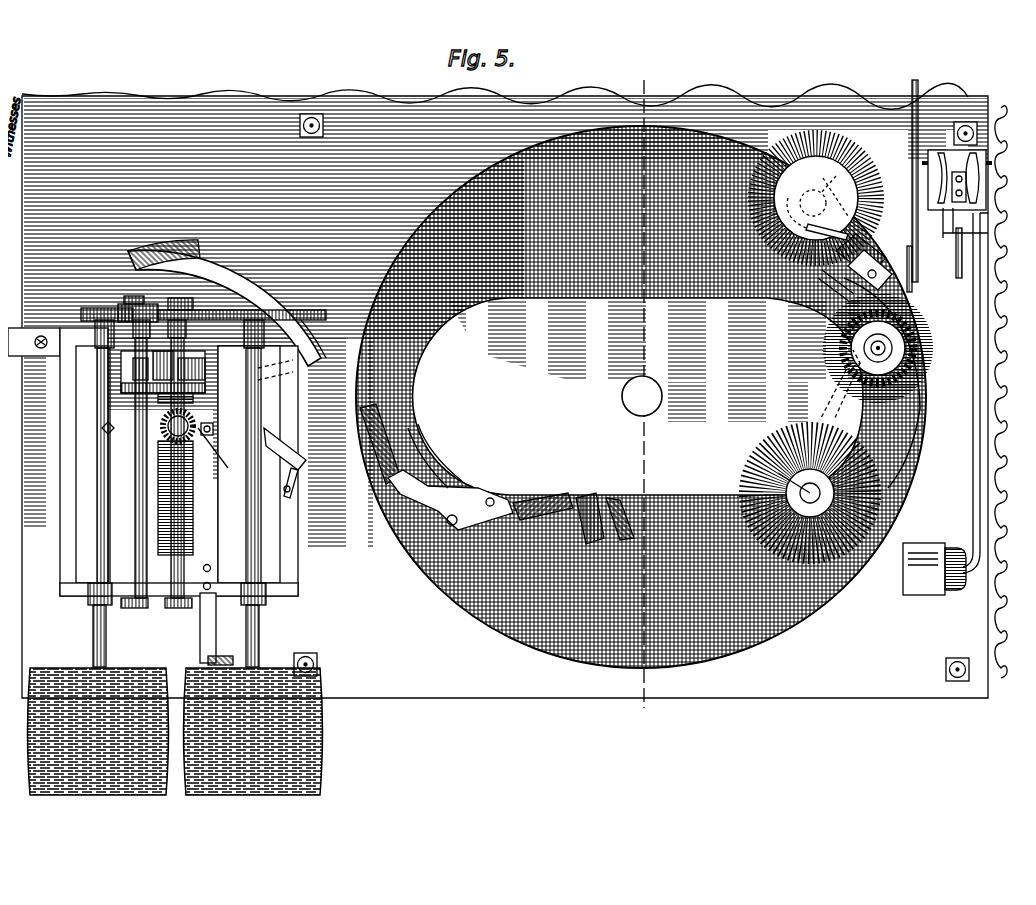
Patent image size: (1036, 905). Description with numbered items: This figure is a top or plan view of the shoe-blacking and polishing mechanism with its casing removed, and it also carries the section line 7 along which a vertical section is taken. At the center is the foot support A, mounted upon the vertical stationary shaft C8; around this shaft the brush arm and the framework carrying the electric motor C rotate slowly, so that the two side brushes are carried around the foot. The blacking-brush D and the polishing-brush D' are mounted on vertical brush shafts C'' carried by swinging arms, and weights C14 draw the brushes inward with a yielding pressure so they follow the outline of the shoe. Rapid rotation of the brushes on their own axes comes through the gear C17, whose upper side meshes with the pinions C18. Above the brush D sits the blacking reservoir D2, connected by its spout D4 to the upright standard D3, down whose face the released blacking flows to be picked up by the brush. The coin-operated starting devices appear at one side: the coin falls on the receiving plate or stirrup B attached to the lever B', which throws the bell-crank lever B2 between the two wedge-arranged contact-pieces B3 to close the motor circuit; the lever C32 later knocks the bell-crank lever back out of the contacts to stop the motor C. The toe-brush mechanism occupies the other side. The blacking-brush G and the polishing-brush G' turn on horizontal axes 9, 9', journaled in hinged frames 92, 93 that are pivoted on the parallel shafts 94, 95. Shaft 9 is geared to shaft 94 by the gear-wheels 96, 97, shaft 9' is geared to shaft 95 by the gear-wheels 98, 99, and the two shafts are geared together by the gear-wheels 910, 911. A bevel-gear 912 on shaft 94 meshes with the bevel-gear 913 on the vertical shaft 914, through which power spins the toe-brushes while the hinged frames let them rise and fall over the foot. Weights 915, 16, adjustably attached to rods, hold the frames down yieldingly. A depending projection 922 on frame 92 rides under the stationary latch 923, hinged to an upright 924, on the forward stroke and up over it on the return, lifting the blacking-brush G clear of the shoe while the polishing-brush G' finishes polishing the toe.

The foot support A is at (641, 397).
The section line 7 7 is at (637, 401).
The vertical stationary shaft C8 is at (642, 396).
The electric motor C is at (497, 474).
The blacking-brush D is at (830, 194).
The blacking reservoir D2 is at (817, 200).
The spout D4 is at (860, 224).
The brush shaft C'' is at (877, 179).
The upright standard D3 is at (878, 252).
The weight C14 is at (868, 285).
The pinion C18 is at (895, 300).
The gear C17 is at (900, 322).
The polishing-brush D' is at (810, 475).
The contact-pieces B3 is at (920, 140).
The lever C32 is at (982, 190).
The bell-crank lever B2 is at (956, 253).
The receiving plate or stirrup B is at (934, 569).
The lever B' is at (957, 515).
The weight 16 is at (12, 352).
The stationary latch or latch-cam 923 is at (268, 282).
The weight 915 is at (295, 306).
The gear-wheel 96 is at (226, 302).
The gear-wheel 97 is at (186, 302).
The gear-wheel 98 is at (100, 300).
The gear-wheel 99 is at (136, 298).
The hinged frame 92 is at (280, 560).
The gear-wheel 910 is at (112, 398).
The gear-wheel 911 is at (188, 398).
The vertical shaft 914 is at (200, 390).
The bevel-gear 912 is at (206, 425).
The bevel-gear 913 is at (210, 460).
The shaft 94 is at (176, 524).
The horizontal axis 9' is at (108, 493).
The horizontal axis 9 is at (258, 493).
The hinged frame 93 is at (64, 545).
The shaft 95 is at (122, 525).
The depending projection 922 is at (300, 448).
The upright 924 is at (285, 358).
The polishing-brush G' is at (98, 718).
The blacking-brush G is at (266, 731).